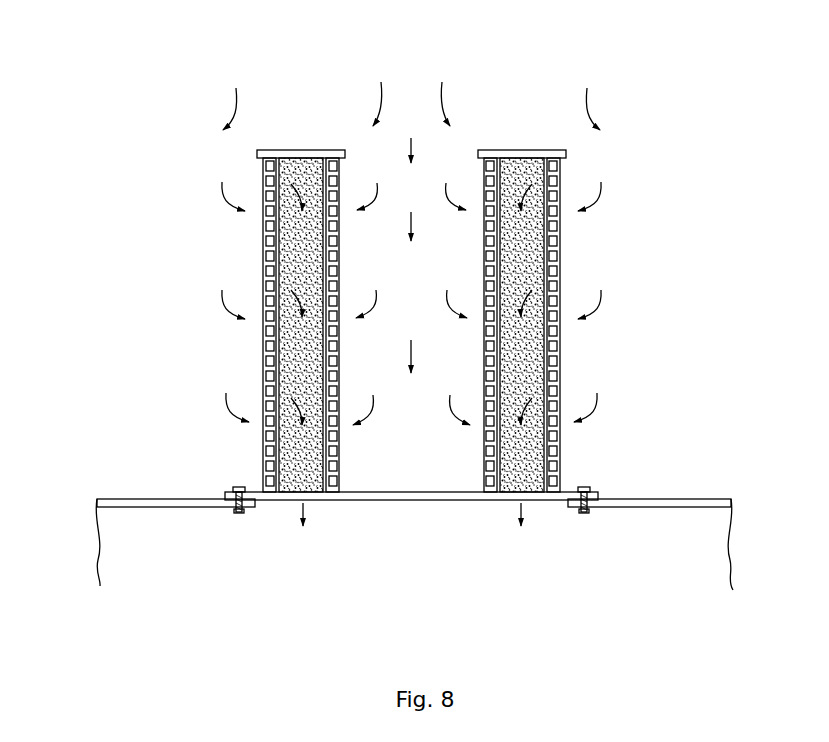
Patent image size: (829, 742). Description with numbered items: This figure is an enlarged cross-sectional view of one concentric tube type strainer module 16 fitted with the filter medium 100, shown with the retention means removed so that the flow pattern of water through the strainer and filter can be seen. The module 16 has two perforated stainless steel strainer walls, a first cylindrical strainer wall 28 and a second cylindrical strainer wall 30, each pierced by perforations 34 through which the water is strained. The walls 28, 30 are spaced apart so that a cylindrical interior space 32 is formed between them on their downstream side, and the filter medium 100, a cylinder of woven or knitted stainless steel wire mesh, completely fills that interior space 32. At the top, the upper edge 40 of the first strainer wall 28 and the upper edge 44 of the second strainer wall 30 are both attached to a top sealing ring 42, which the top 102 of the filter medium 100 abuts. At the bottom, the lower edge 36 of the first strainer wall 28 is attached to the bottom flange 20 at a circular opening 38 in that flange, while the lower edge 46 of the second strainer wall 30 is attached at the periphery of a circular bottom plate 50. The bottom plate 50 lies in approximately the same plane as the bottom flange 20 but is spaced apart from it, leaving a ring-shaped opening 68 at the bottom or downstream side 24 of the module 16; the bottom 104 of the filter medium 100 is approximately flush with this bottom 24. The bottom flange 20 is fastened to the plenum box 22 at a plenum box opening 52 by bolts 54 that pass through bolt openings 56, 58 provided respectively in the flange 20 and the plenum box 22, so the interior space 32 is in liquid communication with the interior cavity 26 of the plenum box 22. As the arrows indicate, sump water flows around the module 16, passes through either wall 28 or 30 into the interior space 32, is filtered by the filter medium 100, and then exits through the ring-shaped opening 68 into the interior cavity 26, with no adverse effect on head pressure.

The concentric tube type strainer module 16 is at (557, 288).
The bottom flange 20 is at (262, 490).
The plenum box 22 is at (131, 498).
The bottom or downstream side 24 is at (355, 501).
The interior cavity 26 is at (716, 572).
The first cylindrical strainer wall 28 is at (267, 376).
The second cylindrical strainer wall 30 is at (345, 255).
The cylindrical interior space 32 is at (270, 346).
The perforations 34 is at (340, 400).
The lower edge of the first strainer 36 is at (265, 478).
The circular opening 38 is at (277, 501).
The upper edge of the first strainer 40 is at (265, 166).
The top sealing ring 42 is at (305, 152).
The upper edge of the second strainer 44 is at (339, 165).
The lower edge of the second strainer 46 is at (338, 489).
The circular bottom plate 50 is at (407, 501).
The plenum box opening 52 is at (262, 506).
The bolts 54 is at (238, 513).
The bolt opening 56 is at (235, 488).
The bolt opening 58 is at (233, 507).
The ring-shaped opening 68 is at (315, 501).
The filter medium 100 is at (283, 262).
The top of the filter medium 102 is at (318, 160).
The bottom of the filter medium 104 is at (336, 452).